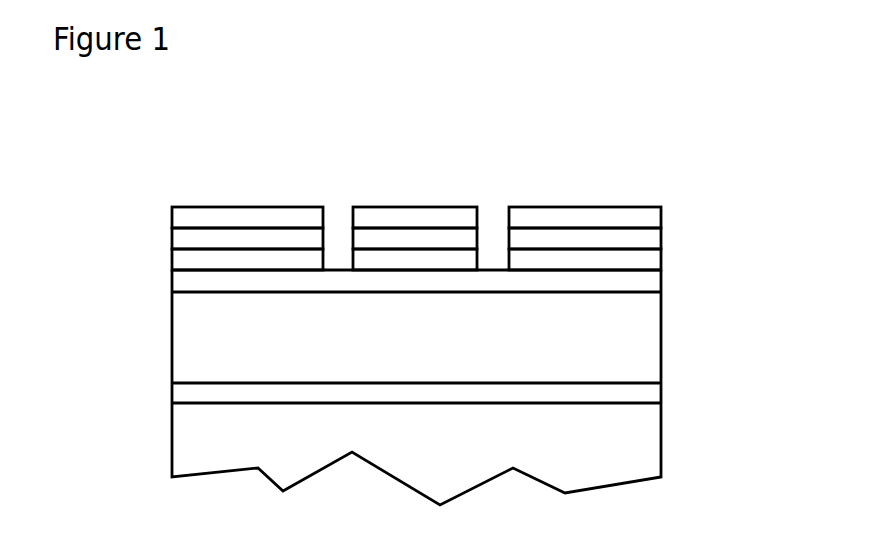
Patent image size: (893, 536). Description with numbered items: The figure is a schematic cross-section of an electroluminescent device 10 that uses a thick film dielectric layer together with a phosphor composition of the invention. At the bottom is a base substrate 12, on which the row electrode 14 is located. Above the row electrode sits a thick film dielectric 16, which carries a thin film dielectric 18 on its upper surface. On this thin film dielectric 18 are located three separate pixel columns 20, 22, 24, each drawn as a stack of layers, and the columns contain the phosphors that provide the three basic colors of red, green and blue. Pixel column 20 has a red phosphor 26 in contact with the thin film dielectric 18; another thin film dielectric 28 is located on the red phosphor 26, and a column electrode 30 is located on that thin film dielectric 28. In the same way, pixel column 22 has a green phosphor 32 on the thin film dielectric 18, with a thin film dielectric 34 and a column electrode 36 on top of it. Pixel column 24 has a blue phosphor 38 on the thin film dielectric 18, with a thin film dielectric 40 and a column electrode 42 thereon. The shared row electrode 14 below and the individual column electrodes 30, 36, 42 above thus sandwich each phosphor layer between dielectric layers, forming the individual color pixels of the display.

The electroluminescent device 10 is at (640, 105).
The base substrate 12 is at (647, 453).
The row electrode 14 is at (653, 397).
The thick film dielectric 16 is at (653, 340).
The thin film dielectric 18 is at (652, 279).
The pixel column 20 is at (244, 157).
The pixel column 22 is at (419, 157).
The pixel column 24 is at (568, 157).
The red phosphor 26 is at (182, 258).
The thin film dielectric 28 is at (182, 240).
The column electrode 30 is at (185, 220).
The green phosphor 32 is at (383, 260).
The thin film dielectric 34 is at (445, 238).
The column electrode 36 is at (370, 220).
The blue phosphor 38 is at (548, 260).
The thin film dielectric 40 is at (647, 239).
The column electrode 42 is at (647, 217).